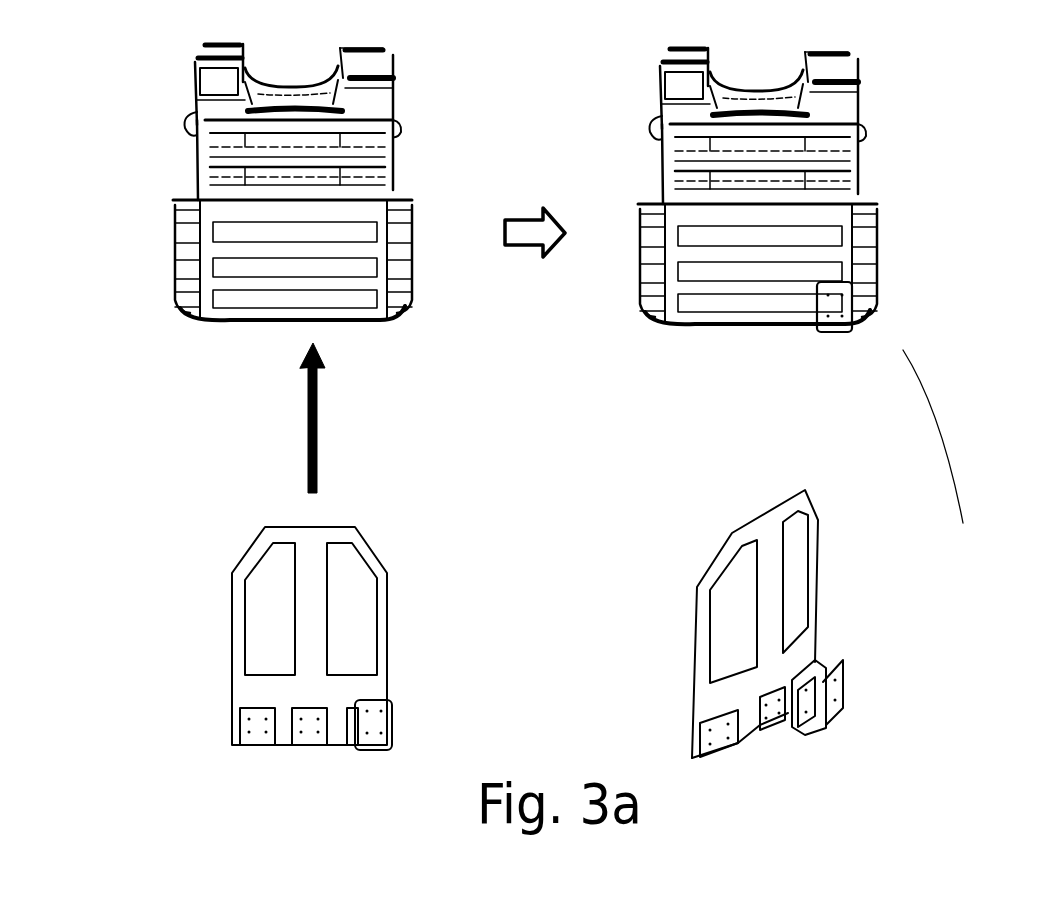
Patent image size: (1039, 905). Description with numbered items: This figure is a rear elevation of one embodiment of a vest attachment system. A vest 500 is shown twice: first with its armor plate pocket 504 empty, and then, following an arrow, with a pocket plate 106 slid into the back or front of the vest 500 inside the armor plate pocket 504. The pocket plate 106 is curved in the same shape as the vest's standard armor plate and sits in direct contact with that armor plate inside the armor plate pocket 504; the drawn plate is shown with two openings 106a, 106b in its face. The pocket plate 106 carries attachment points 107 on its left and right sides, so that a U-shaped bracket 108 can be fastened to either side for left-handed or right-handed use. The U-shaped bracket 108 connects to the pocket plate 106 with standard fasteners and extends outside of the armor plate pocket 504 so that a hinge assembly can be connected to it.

The vest 500 is at (588, 233).
The armor plate pocket 504 is at (390, 323).
The pocket plate 106 is at (554, 675).
The first window opening 106a is at (267, 572).
The second window opening 106b is at (358, 597).
The attachment points 107 is at (245, 722).
The U-shaped bracket 108 is at (858, 652).